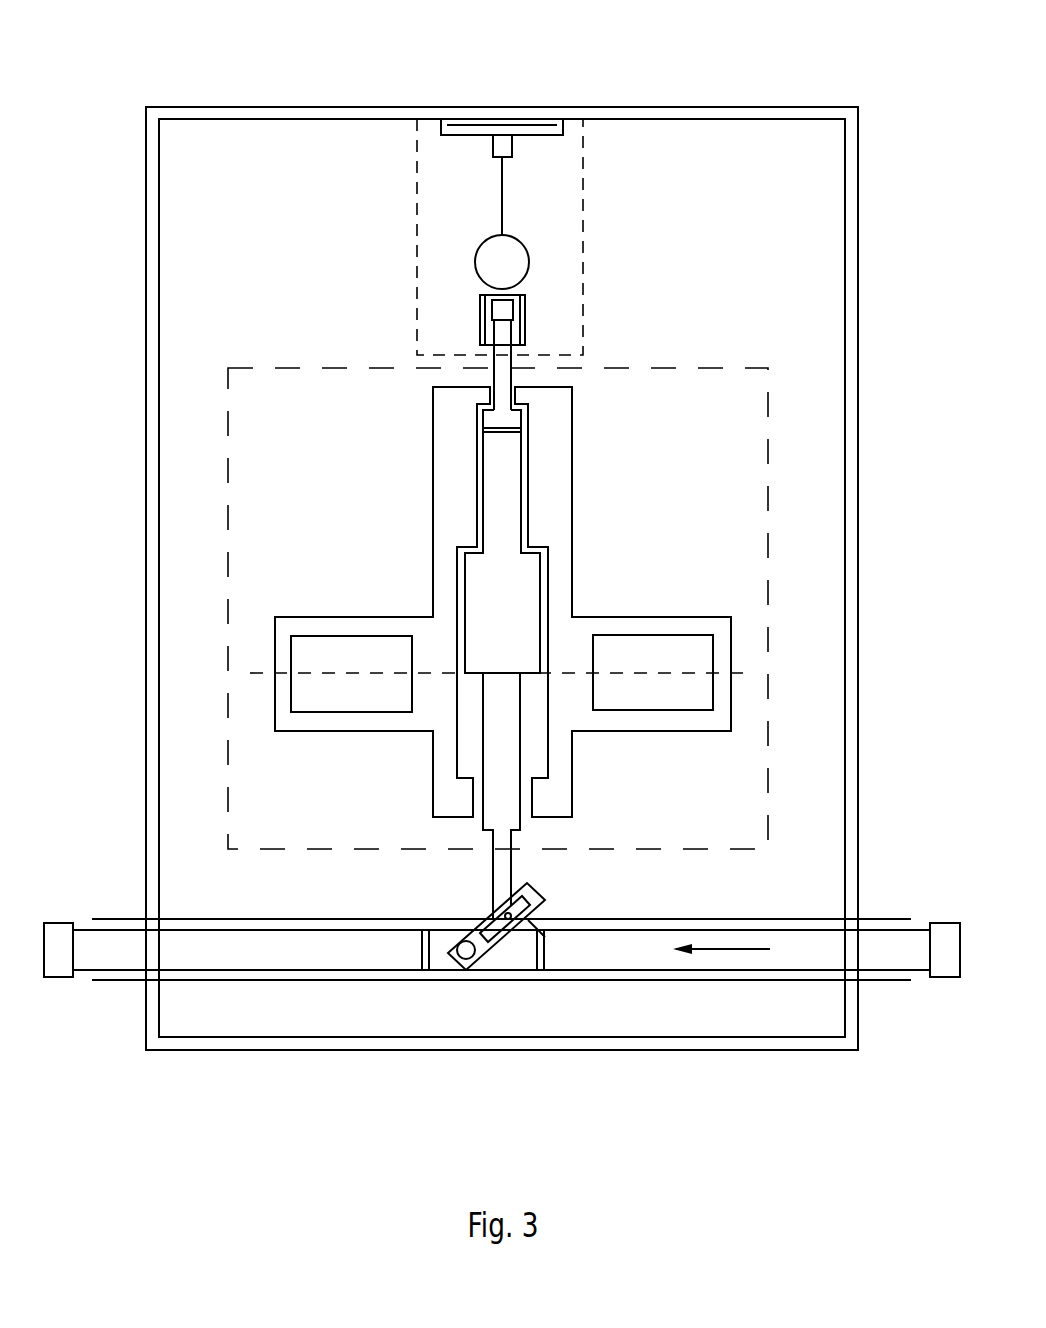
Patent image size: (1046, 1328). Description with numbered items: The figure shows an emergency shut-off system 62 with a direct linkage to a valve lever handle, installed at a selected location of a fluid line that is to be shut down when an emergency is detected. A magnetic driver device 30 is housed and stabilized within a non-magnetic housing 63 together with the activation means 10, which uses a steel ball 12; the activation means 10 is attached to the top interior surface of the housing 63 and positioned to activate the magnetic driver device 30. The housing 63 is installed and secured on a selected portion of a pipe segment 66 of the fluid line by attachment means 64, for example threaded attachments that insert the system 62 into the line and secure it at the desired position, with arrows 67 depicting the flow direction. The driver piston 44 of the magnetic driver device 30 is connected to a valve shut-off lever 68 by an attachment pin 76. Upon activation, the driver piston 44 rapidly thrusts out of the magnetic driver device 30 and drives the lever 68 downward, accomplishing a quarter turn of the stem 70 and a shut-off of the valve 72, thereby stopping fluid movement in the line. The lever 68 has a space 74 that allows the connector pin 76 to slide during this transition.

The activation means 10 is at (530, 237).
The steel ball 12 is at (510, 255).
The magnetic driver device 30 is at (510, 590).
The driver piston 44 is at (505, 858).
The system 62 is at (233, 70).
The non-magnetic housing 63 is at (152, 257).
The attachment means 64 is at (58, 930).
The pipe segment 66 is at (273, 955).
The arrows 67 is at (746, 952).
The valve shut-off lever 68 is at (505, 913).
The stem 70 is at (465, 947).
The valve 72 is at (517, 957).
The space 74 is at (490, 916).
The attachment pin 76 is at (528, 920).